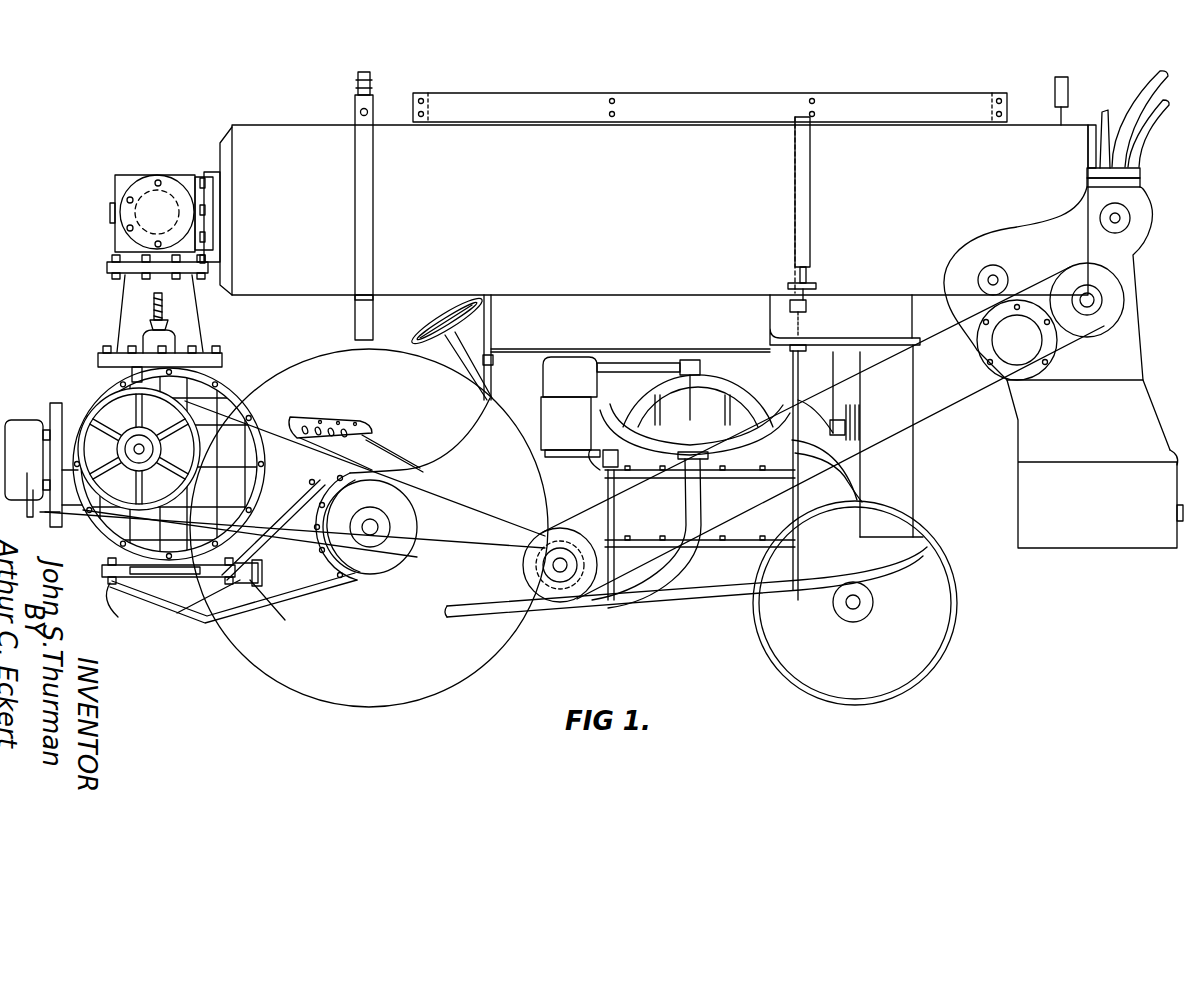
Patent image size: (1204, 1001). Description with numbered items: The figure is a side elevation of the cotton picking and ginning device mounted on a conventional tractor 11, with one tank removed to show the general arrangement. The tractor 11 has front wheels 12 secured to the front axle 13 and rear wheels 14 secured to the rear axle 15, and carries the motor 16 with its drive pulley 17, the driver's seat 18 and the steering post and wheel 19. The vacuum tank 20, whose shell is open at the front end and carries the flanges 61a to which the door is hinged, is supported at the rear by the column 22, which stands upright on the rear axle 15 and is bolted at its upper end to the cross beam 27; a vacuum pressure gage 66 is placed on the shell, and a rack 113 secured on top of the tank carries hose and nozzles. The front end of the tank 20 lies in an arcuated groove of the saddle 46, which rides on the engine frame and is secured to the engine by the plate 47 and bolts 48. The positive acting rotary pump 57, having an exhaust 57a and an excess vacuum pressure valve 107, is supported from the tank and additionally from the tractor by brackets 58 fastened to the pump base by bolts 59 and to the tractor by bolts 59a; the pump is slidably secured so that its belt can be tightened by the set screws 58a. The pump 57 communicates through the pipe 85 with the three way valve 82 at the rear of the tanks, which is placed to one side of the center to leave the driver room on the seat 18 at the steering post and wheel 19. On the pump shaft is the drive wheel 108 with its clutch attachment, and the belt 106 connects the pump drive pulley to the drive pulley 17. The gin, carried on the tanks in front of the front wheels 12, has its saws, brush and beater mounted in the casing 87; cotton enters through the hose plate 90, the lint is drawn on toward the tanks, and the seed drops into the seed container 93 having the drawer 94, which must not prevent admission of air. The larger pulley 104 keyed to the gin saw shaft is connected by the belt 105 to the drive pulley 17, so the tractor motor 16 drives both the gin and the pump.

The tractor 11 is at (626, 347).
The front wheels 12 is at (958, 593).
The front axle 13 is at (860, 604).
The rear wheels 14 is at (428, 688).
The rear axle 15 is at (372, 527).
The motor 16 is at (708, 585).
The drive pulley 17 is at (553, 583).
The driver's seat 18 is at (365, 422).
The steering post and wheel 19 is at (445, 318).
The vacuum tank 20 is at (255, 140).
The column 22 is at (360, 322).
The cross beam 27 is at (355, 108).
The saddle 46 is at (815, 300).
The plate 47 is at (795, 343).
The bolts 48 is at (790, 318).
The positive acting rotary pump 57 is at (232, 393).
The exhaust 57a is at (42, 523).
The brackets 58 is at (302, 605).
The set screws 58a is at (240, 582).
The bolts 59 is at (120, 604).
The bolts 59a is at (360, 583).
The flanges 61a is at (1100, 112).
The vacuum pressure gage 66 is at (1055, 85).
The three way valve 82 is at (150, 170).
The pipe 85 is at (125, 330).
The casing 87 is at (1150, 197).
The hose plate 90 is at (1138, 168).
The seed container 93 is at (1142, 535).
The drawer 94 is at (1168, 452).
The larger pulley 104 is at (1113, 299).
The belt 105 is at (945, 405).
The belt 106 is at (450, 498).
The excess vacuum pressure valve 107 is at (150, 305).
The drive wheel 108 is at (105, 410).
The rack 113 is at (654, 103).